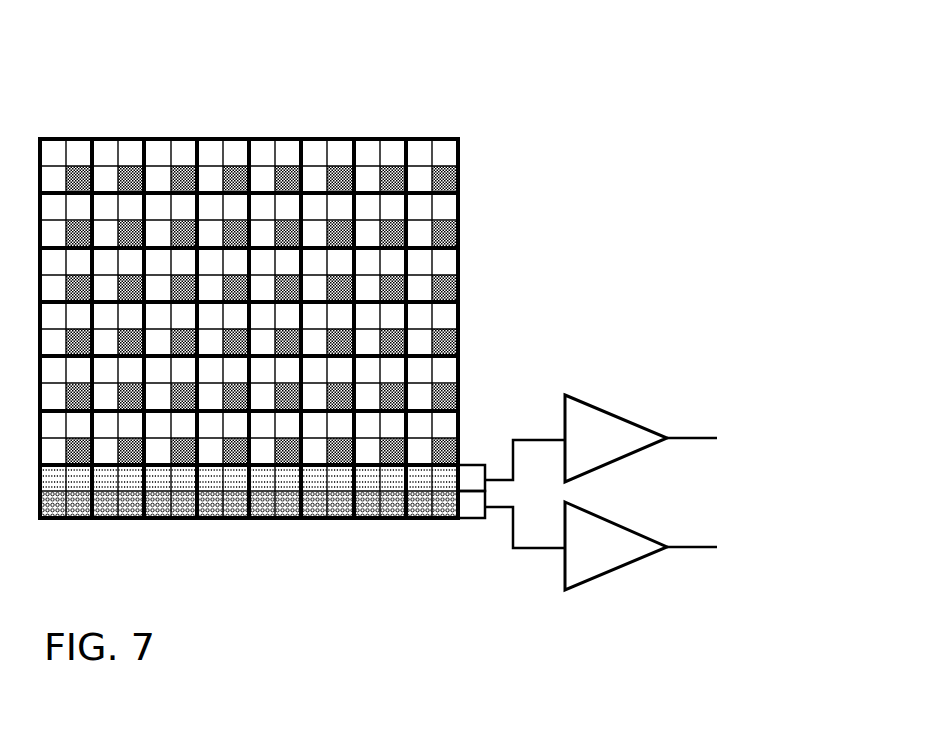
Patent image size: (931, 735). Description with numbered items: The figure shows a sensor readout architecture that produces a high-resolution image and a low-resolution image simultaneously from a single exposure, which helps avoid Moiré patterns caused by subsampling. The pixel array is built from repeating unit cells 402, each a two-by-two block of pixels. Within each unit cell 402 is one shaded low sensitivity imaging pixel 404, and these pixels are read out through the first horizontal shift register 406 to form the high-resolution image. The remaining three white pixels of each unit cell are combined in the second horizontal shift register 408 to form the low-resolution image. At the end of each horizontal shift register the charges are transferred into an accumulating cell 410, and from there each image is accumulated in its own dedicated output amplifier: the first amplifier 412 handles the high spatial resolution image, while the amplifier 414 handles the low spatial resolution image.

The unit cell 402 is at (470, 140).
The low sensitivity imaging pixel 404 is at (445, 175).
The first horizontal shift register 406 is at (147, 481).
The second horizontal shift register 408 is at (261, 507).
The accumulating cell 410 is at (472, 504).
The first amplifier 412 is at (612, 441).
The amplifier 414 is at (612, 550).